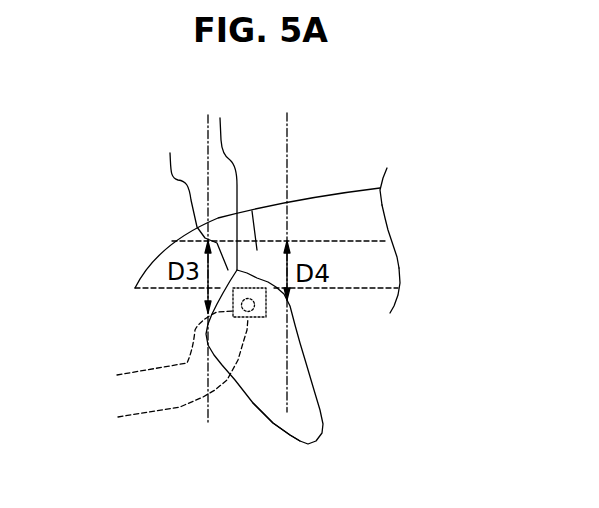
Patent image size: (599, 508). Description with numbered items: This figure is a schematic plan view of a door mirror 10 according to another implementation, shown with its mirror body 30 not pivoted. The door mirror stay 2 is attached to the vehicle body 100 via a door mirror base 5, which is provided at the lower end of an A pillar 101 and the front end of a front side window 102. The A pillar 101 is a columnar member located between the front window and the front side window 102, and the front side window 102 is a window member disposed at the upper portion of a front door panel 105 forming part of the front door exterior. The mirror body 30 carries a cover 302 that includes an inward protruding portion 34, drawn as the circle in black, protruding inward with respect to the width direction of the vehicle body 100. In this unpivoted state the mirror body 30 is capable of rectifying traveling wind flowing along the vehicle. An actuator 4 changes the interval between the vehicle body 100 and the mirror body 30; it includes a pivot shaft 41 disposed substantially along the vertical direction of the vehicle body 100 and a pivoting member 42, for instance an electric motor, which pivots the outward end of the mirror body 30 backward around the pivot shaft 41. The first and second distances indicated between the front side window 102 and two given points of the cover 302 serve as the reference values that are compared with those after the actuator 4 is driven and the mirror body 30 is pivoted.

The vehicle body 100 is at (147, 256).
The A pillar 101 is at (368, 181).
The front side window 102 is at (373, 217).
The front door panel 105 is at (385, 270).
The door mirror base 5 is at (195, 199).
The inward protruding portion 34 is at (229, 181).
The door mirror stay 2 is at (258, 255).
The door mirror 10 is at (329, 285).
The mirror body 30 is at (325, 407).
The cover 302 is at (268, 419).
The actuator 4 is at (148, 374).
The pivot shaft 41 is at (158, 350).
The pivoting member 42 is at (84, 358).